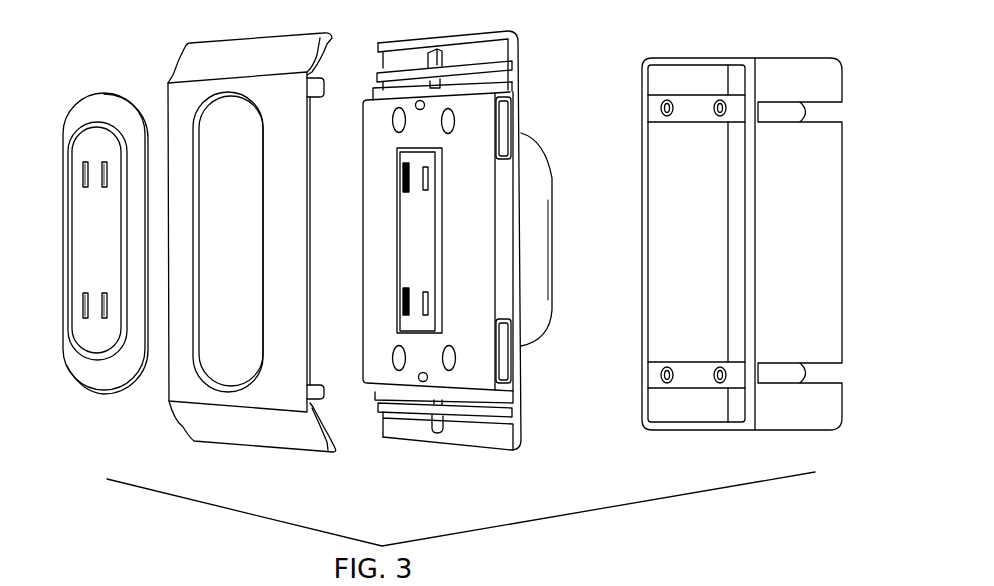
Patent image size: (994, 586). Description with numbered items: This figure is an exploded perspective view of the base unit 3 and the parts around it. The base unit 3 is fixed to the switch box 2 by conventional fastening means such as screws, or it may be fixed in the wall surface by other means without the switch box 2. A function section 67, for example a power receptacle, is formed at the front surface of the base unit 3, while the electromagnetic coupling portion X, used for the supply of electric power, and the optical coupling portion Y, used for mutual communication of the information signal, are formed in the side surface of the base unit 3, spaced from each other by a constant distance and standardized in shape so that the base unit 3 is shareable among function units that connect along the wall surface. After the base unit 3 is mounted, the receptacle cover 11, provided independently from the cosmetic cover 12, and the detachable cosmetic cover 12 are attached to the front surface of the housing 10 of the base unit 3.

The switch box 2 is at (783, 75).
The base unit 3 is at (519, 55).
The housing 10 is at (460, 225).
The receptacle cover 11 is at (112, 110).
The cosmetic cover 12 is at (200, 93).
The function section 67 is at (418, 237).
The electromagnetic coupling portion X is at (503, 131).
The optical coupling portion Y is at (504, 356).